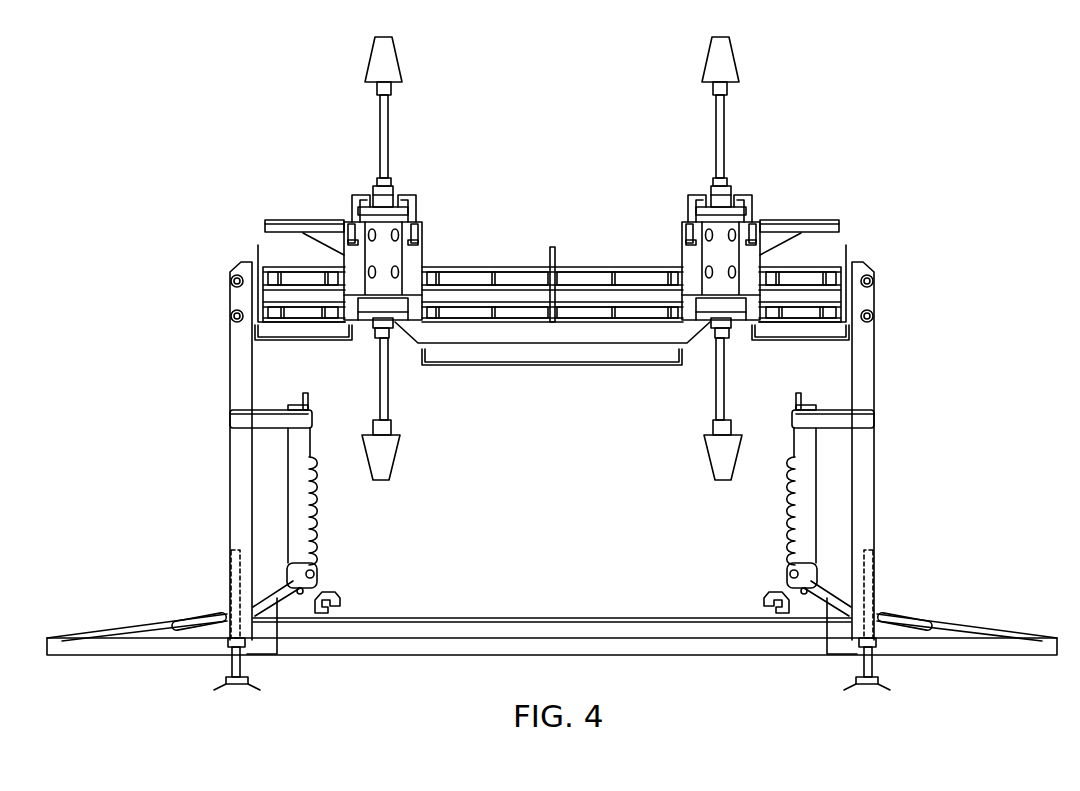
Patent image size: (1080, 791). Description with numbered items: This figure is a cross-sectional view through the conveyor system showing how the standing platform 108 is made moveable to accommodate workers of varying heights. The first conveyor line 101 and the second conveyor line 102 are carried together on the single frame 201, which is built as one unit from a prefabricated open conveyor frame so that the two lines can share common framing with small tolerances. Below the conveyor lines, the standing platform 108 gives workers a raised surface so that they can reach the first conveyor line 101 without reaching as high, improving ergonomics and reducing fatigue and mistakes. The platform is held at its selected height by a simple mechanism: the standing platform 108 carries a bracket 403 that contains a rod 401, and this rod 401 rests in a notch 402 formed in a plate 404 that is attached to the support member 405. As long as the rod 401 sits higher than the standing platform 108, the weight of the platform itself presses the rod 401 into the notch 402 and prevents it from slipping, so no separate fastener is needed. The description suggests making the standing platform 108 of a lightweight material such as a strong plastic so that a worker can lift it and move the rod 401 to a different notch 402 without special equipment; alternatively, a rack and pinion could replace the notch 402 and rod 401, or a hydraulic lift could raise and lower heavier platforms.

The first conveyor line 101 is at (748, 212).
The second conveyor line 102 is at (590, 268).
The standing platform 108 is at (77, 630).
The frame 201 is at (427, 253).
The rod 401 is at (301, 597).
The notch 402 is at (315, 522).
The bracket 403 is at (335, 593).
The plate 404 is at (290, 487).
The support member 405 is at (230, 515).